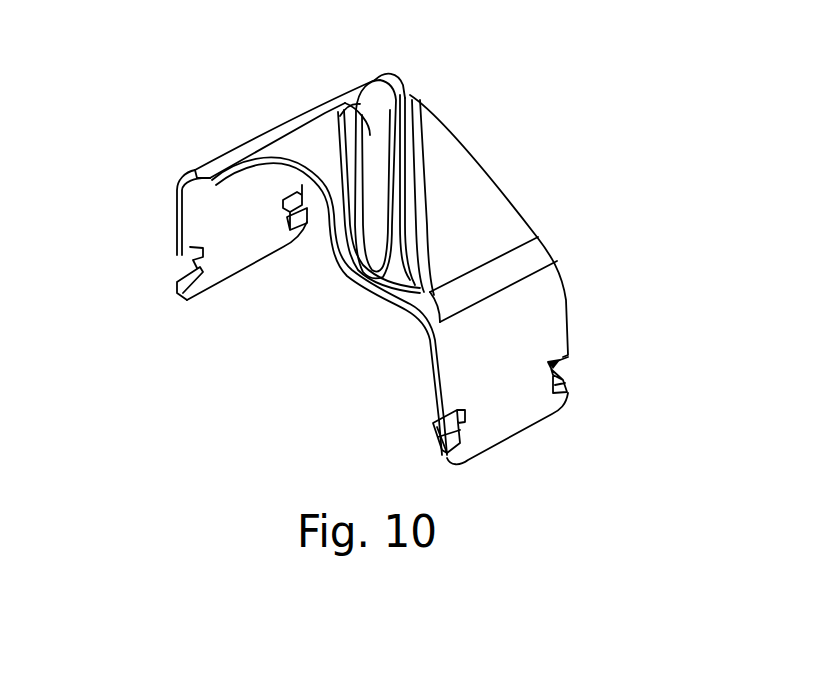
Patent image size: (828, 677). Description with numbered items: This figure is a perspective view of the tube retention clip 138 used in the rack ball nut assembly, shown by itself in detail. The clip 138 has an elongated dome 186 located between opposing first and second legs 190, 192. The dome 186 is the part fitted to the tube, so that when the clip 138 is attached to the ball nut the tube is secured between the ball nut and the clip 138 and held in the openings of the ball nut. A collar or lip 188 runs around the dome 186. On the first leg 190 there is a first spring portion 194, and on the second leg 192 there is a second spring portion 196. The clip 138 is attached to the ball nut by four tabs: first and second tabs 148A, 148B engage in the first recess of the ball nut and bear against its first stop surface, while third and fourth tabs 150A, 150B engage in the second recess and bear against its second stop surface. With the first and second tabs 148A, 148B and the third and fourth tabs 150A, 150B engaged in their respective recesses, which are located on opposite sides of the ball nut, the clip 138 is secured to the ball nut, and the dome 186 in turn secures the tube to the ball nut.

The clip 138 is at (478, 170).
The first tab 148A is at (433, 430).
The second tab 148B is at (563, 373).
The third tab 150A is at (183, 277).
The fourth tab 150B is at (320, 230).
The elongated dome 186 is at (353, 93).
The collar or lip 188 is at (405, 130).
The first leg 190 is at (553, 328).
The second leg 192 is at (203, 217).
The first spring portion 194 is at (540, 262).
The second spring portion 196 is at (226, 153).